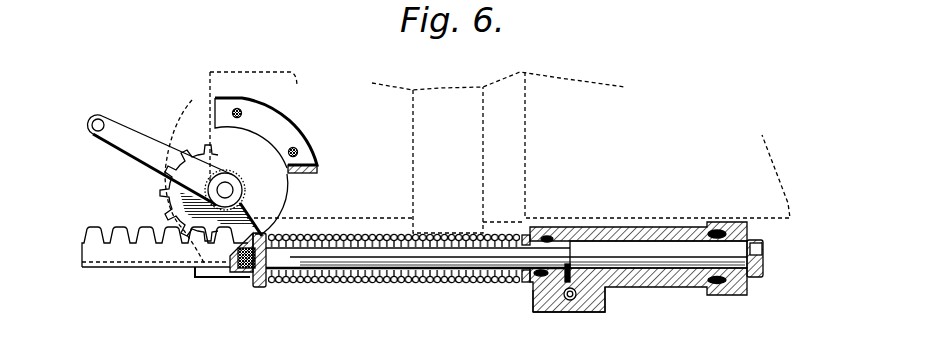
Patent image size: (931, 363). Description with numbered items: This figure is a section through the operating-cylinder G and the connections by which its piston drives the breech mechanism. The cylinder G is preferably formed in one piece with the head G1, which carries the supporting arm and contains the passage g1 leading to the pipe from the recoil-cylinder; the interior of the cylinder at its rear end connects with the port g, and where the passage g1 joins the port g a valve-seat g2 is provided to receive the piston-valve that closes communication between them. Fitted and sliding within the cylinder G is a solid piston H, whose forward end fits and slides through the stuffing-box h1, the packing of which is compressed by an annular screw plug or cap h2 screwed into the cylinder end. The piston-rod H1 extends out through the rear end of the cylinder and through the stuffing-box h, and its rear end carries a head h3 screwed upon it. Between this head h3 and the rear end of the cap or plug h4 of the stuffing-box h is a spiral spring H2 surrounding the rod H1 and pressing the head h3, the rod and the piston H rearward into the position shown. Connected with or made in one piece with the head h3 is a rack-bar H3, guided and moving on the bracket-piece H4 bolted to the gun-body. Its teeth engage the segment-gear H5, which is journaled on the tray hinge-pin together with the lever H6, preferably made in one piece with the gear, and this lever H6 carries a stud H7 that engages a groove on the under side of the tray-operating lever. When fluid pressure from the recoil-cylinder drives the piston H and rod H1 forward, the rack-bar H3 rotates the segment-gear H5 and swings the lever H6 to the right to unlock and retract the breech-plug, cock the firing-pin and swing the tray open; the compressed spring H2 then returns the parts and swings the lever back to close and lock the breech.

The stud H7 is at (100, 124).
The lever H6 is at (158, 146).
The segment-gear H5 is at (163, 205).
The bracket-piece H4 is at (213, 270).
The rack-bar H3 is at (145, 255).
The spiral spring H2 is at (357, 233).
The piston-rod H1 is at (397, 260).
The head h3 is at (255, 287).
The cap or plug of the stuffing-box h4 is at (530, 227).
The stuffing-box h is at (550, 230).
The operating-cylinder G is at (613, 228).
The solid piston H is at (672, 247).
The stuffing-box h1 is at (717, 232).
The annular screw plug or cap h2 is at (750, 232).
The valve-seat g2 is at (553, 300).
The port g is at (603, 291).
The head G1 is at (568, 300).
The passage g1 is at (580, 304).